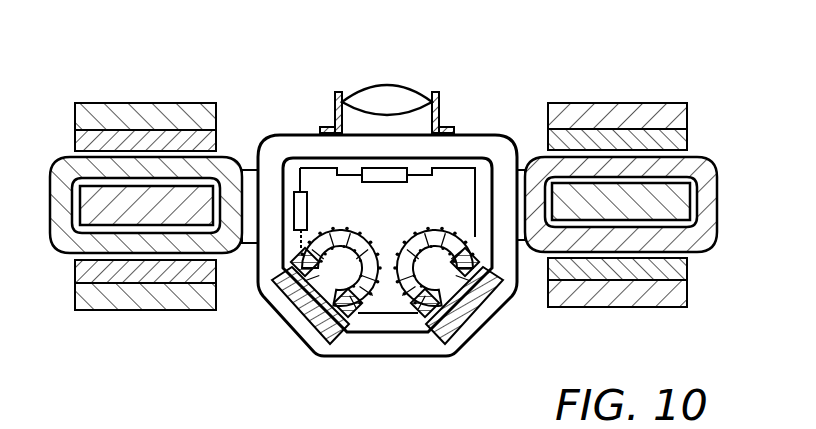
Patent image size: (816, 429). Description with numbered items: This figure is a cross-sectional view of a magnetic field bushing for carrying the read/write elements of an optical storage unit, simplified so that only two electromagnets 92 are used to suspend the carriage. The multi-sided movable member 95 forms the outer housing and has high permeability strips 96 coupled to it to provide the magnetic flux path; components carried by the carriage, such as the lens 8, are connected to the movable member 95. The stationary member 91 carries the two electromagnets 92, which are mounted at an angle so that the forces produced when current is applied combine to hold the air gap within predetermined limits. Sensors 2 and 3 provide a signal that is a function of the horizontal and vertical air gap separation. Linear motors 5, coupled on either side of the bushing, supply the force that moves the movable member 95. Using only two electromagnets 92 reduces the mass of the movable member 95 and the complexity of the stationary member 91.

The sensor 2 is at (312, 197).
The sensor 3 is at (392, 170).
The linear motor 5 is at (48, 287).
The lens 8 is at (388, 84).
The stationary member 91 is at (391, 320).
The electromagnet 92 is at (398, 247).
The movable member 95 is at (360, 357).
The high permeability strip 96 is at (303, 303).